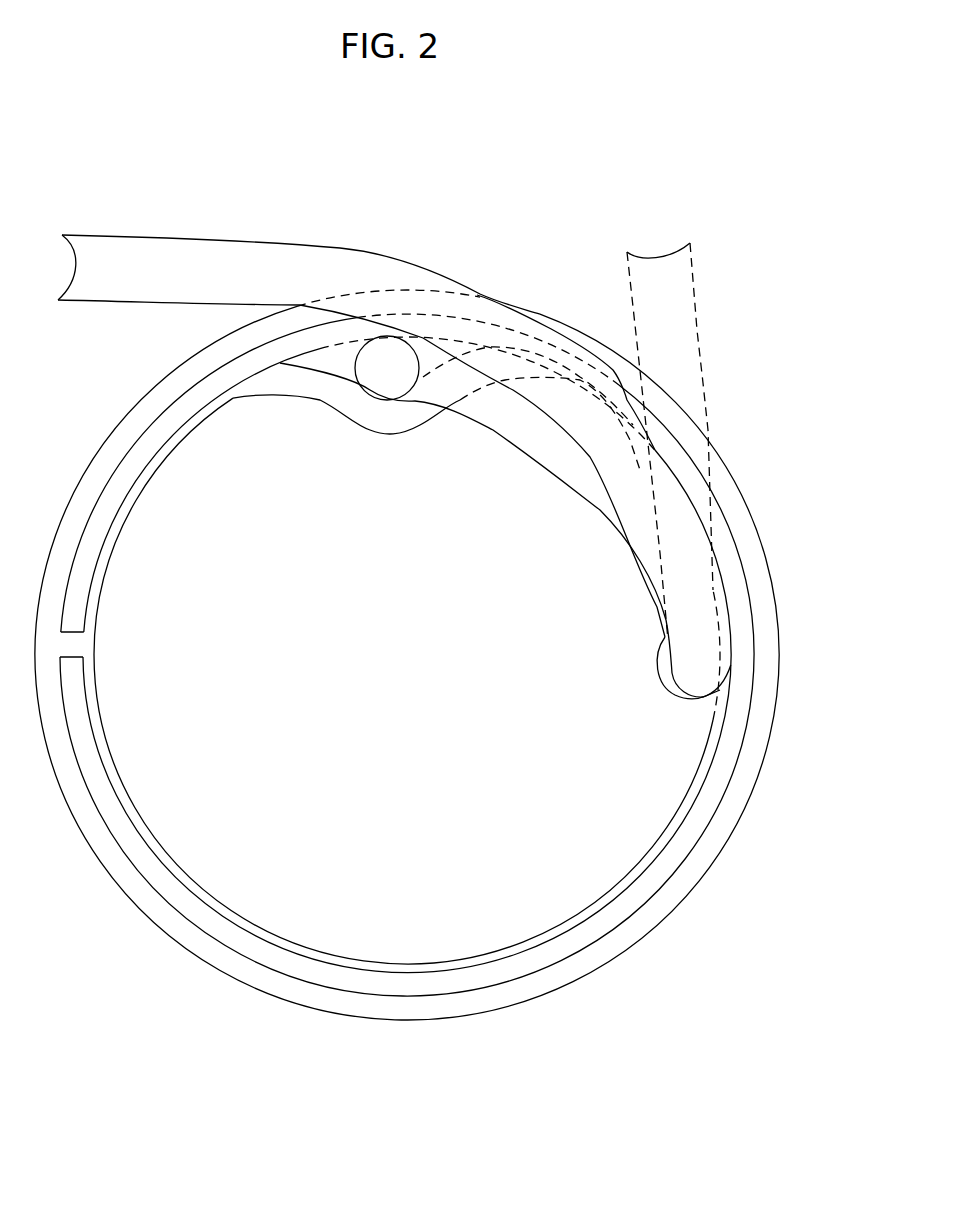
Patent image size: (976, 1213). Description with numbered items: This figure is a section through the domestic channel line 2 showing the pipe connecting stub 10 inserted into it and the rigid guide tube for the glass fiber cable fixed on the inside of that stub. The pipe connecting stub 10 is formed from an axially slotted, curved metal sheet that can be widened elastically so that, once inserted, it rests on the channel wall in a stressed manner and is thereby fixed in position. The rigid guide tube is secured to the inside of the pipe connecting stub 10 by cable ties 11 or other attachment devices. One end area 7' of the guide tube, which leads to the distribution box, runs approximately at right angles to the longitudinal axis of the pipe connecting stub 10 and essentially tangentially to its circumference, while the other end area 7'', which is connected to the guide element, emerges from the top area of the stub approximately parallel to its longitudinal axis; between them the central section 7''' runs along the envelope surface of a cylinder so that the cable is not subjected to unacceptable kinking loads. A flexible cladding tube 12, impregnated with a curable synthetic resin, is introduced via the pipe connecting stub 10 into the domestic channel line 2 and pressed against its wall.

The domestic channel line 2 is at (660, 397).
The end area of the rigid guide tube 7' is at (434, 597).
The other end area of the rigid guide tube 7'' is at (312, 407).
The central section of the rigid guide tube 7''' is at (482, 409).
The pipe connecting stub 10 is at (663, 865).
The cable ties 11 is at (697, 697).
The flexible cladding tube 12 is at (392, 420).